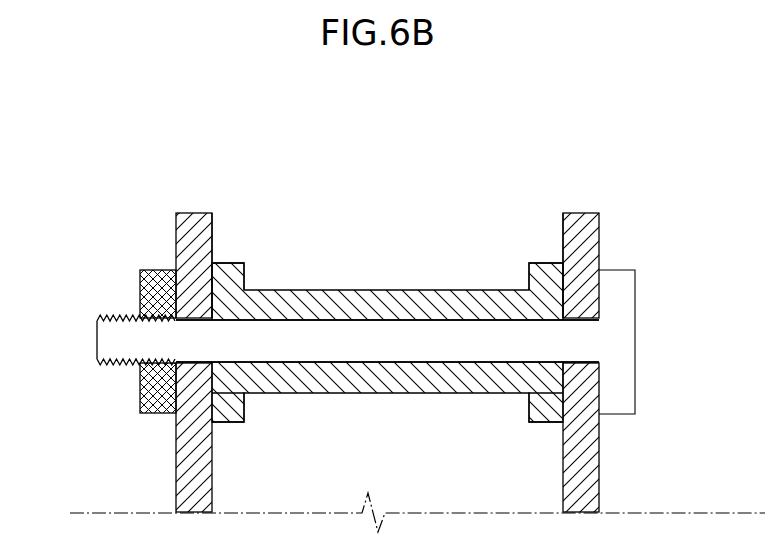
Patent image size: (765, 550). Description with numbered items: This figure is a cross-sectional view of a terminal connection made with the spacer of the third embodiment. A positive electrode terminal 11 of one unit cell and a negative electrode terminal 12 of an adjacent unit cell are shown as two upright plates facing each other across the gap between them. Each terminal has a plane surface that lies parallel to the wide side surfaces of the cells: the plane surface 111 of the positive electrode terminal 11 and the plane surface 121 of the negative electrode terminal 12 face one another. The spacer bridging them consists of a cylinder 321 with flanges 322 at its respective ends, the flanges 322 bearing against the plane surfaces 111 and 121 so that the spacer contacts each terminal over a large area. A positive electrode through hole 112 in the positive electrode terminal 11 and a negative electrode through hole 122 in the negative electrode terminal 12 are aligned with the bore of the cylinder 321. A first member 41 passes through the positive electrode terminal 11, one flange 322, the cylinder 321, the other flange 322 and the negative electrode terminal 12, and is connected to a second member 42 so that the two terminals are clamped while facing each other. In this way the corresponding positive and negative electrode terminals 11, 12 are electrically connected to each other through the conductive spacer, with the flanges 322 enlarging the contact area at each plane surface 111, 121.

The positive electrode terminal 11 is at (597, 188).
The plane surface 111 is at (563, 235).
The positive electrode through hole 112 is at (581, 362).
The negative electrode terminal 12 is at (171, 190).
The plane surface 121 is at (213, 229).
The negative electrode through hole 122 is at (191, 362).
The cylinder 321 is at (357, 290).
The flange 322 is at (232, 263).
The first member 41 is at (622, 316).
The second member 42 is at (140, 290).